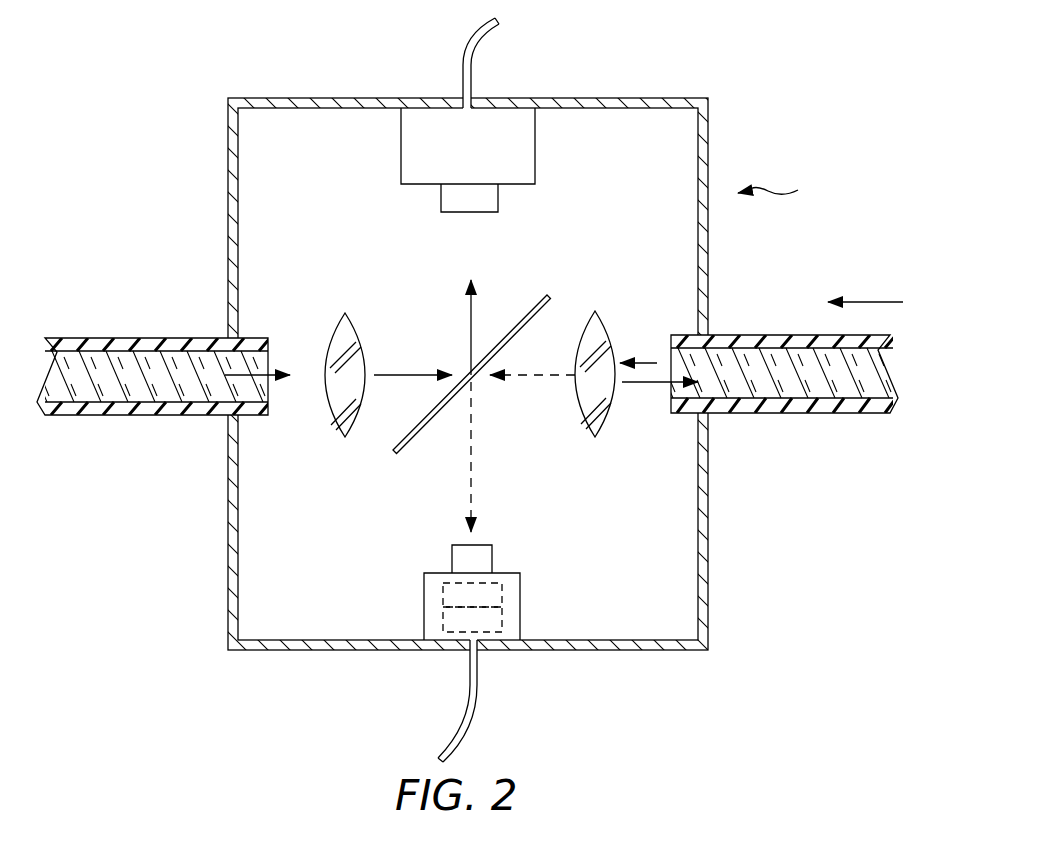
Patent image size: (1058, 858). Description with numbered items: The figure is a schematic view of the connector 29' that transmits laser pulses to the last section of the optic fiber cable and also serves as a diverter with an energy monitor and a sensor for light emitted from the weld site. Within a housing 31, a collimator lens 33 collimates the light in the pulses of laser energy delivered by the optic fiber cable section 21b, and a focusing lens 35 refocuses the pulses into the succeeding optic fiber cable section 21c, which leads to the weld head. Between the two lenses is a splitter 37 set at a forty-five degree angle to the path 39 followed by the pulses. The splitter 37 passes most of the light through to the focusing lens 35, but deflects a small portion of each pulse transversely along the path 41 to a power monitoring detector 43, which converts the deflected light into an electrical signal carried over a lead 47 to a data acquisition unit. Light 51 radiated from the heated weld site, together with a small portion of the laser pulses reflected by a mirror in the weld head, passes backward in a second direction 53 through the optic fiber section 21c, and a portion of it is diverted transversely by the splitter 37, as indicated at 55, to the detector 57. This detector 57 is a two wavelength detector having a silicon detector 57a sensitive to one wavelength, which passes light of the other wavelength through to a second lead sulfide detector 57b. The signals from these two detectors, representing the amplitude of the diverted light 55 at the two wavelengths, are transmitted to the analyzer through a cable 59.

The optic fiber cable section 21b is at (113, 338).
The optic fiber cable section 21c is at (760, 335).
The connector 29' is at (792, 188).
The housing 31 is at (643, 96).
The collimator lens 33 is at (340, 330).
The focusing lens 35 is at (598, 311).
The splitter 37 is at (410, 452).
The path 39 is at (405, 372).
The path 41 is at (472, 316).
The power monitoring detector 43 is at (535, 159).
The lead 47 is at (472, 62).
The light 51 is at (648, 355).
The second direction 53 is at (868, 302).
The diverted light 55 is at (473, 465).
The detector 57 is at (468, 592).
The silicon detector 57a is at (440, 593).
The lead sulfide detector 57b is at (440, 619).
The cable 59 is at (478, 705).